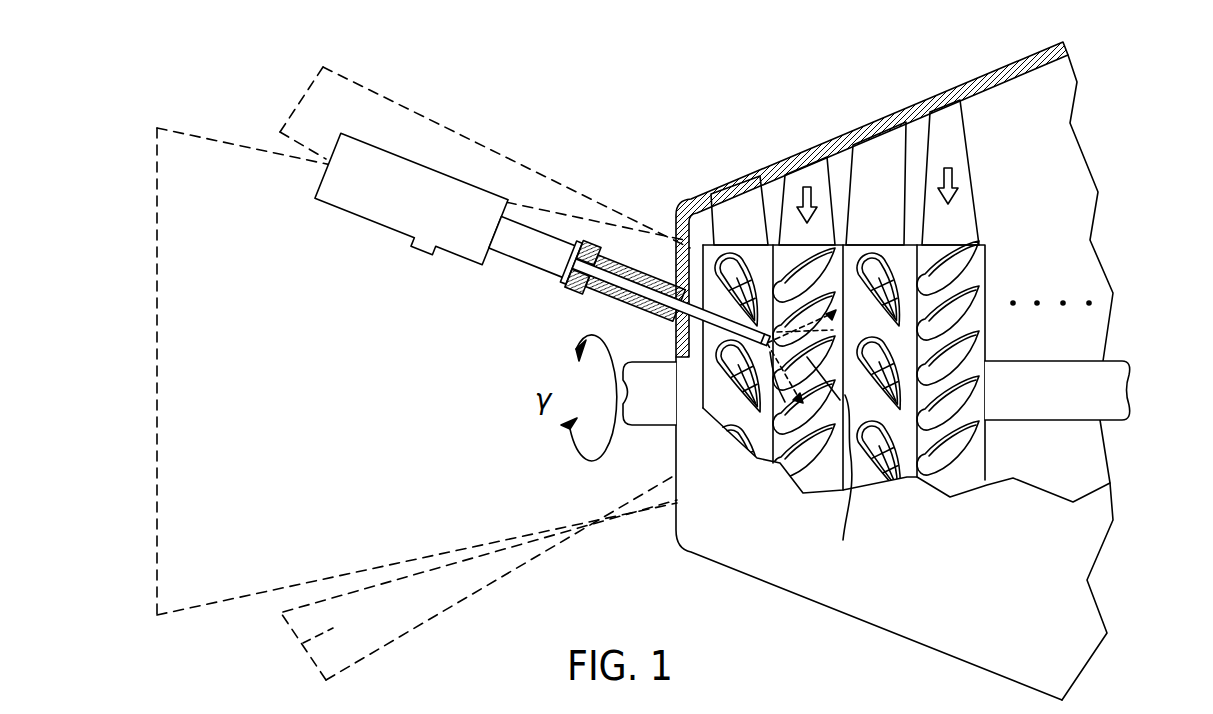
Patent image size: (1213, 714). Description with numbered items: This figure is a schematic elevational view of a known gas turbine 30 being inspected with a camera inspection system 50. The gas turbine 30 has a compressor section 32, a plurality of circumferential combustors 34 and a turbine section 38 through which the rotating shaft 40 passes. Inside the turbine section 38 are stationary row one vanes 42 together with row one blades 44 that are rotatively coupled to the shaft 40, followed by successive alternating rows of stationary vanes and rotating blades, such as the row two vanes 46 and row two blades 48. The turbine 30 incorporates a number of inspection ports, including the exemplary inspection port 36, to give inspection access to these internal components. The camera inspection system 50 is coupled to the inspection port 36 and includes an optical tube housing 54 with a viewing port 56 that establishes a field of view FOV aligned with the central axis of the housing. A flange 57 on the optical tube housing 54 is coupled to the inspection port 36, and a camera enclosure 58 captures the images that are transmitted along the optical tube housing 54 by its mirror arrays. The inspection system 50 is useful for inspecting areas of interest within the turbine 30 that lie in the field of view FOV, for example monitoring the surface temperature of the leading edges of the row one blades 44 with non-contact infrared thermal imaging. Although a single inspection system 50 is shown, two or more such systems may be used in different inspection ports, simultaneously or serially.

The gas turbine 30 is at (253, 40).
The compressor section 32 is at (195, 350).
The circumferential combustors 34 is at (365, 108).
The inspection port 36 is at (570, 290).
The turbine section 38 is at (745, 539).
The rotating shaft 40 is at (1132, 386).
The row 1 vanes 42 is at (758, 383).
The row 1 blades 44 is at (807, 467).
The row 2 vanes 46 is at (883, 290).
The row 2 blades 48 is at (960, 368).
The camera inspection system 50 is at (303, 223).
The optical tube housing 54 is at (634, 290).
The viewing port 56 is at (815, 372).
The flange 57 is at (588, 240).
The camera enclosure 58 is at (445, 190).
The field of view FOV is at (843, 540).